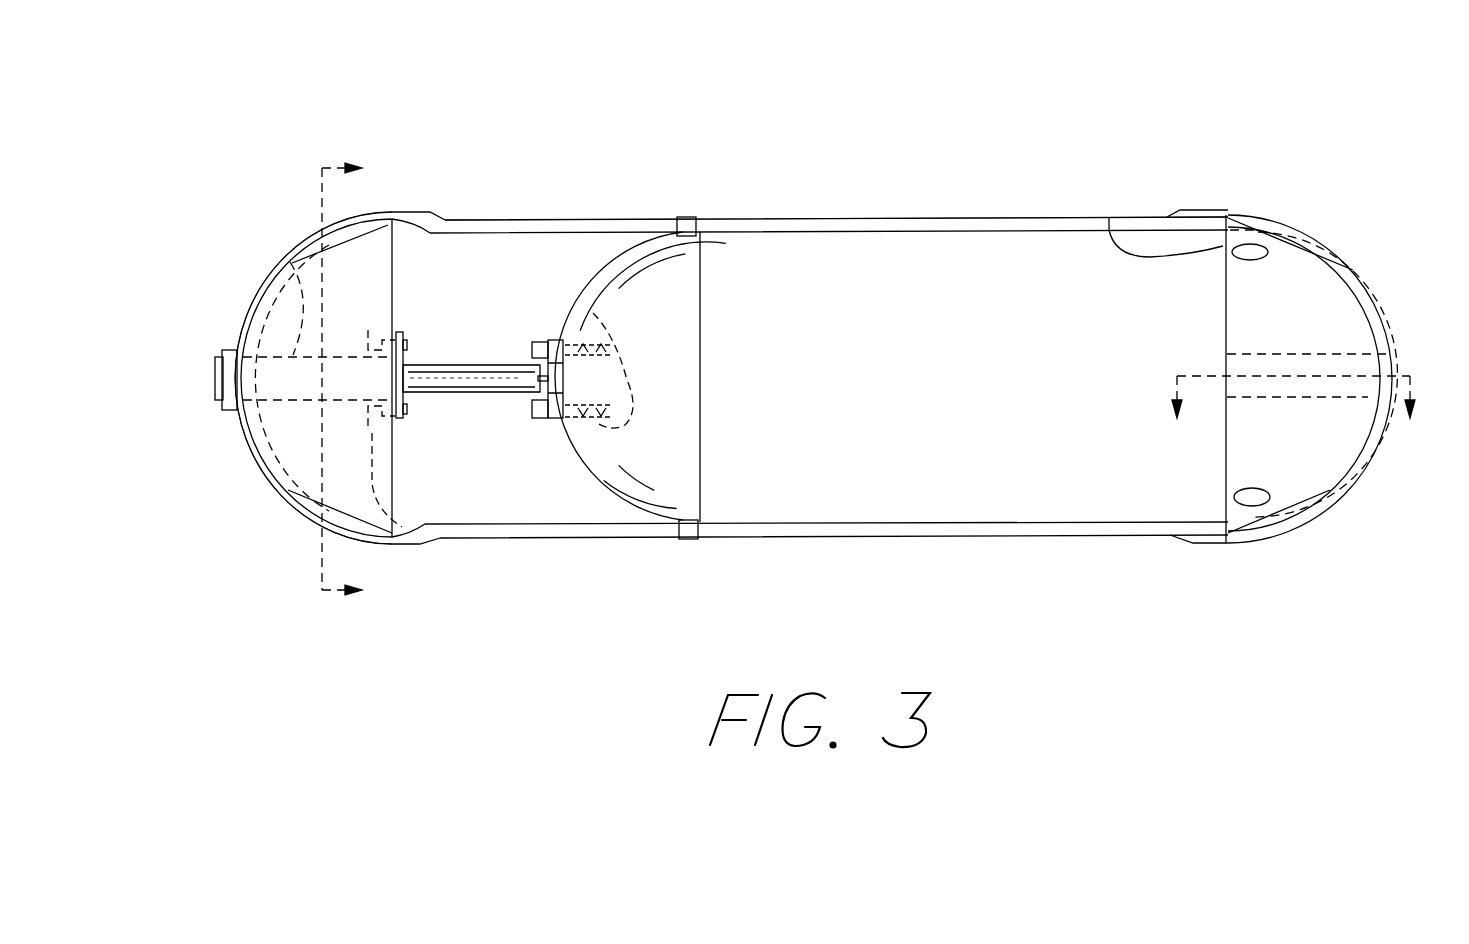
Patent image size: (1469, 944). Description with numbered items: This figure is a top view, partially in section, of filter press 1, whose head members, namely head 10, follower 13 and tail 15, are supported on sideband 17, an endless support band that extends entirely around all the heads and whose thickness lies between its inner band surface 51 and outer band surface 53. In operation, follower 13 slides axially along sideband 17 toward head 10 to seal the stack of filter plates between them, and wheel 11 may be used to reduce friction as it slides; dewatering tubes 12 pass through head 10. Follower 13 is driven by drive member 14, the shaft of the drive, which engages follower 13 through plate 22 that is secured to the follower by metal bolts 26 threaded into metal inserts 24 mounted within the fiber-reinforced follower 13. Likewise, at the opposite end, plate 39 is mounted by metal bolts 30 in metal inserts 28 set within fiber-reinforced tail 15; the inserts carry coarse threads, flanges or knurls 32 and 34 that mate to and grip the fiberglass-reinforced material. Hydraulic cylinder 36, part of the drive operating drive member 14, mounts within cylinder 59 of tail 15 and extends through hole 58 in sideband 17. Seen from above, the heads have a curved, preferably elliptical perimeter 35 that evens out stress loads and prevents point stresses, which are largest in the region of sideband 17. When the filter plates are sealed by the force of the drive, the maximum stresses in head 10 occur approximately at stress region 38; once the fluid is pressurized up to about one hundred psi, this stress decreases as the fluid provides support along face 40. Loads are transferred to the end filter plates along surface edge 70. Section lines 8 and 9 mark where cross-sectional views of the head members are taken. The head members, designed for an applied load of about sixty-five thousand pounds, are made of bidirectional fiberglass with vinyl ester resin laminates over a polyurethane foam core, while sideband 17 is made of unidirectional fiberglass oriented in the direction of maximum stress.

The filter press 1 is at (888, 160).
The section line 8- 8 is at (360, 384).
The section line 9- 9 is at (1295, 420).
The head 10 is at (1263, 327).
The wheel 11 is at (690, 218).
The dewatering tubes 12 is at (1257, 261).
The follower 13 is at (688, 408).
The drive member 14 is at (478, 393).
The tail 15 is at (293, 303).
The sideband 17 is at (240, 325).
The plate 22 is at (535, 410).
The metal inserts 24 is at (647, 404).
The metal bolts 26 is at (535, 347).
The metal inserts 28 is at (372, 328).
The metal bolts 30 is at (405, 343).
The coarse threads, flanges or knurls 32 is at (613, 297).
The coarse threads, flanges or knurls 34 is at (372, 300).
The elliptical perimeter 35 is at (253, 460).
The hydraulic cylinder 36 is at (210, 385).
The stress region 38 is at (1257, 243).
The plate 39 is at (405, 357).
The face 40 is at (1223, 358).
The inner band surface 51 is at (1363, 323).
The outer band surface 53 is at (810, 222).
The hole 58 is at (215, 362).
The cylinder 59 is at (290, 250).
The surface edge 70 is at (1108, 217).